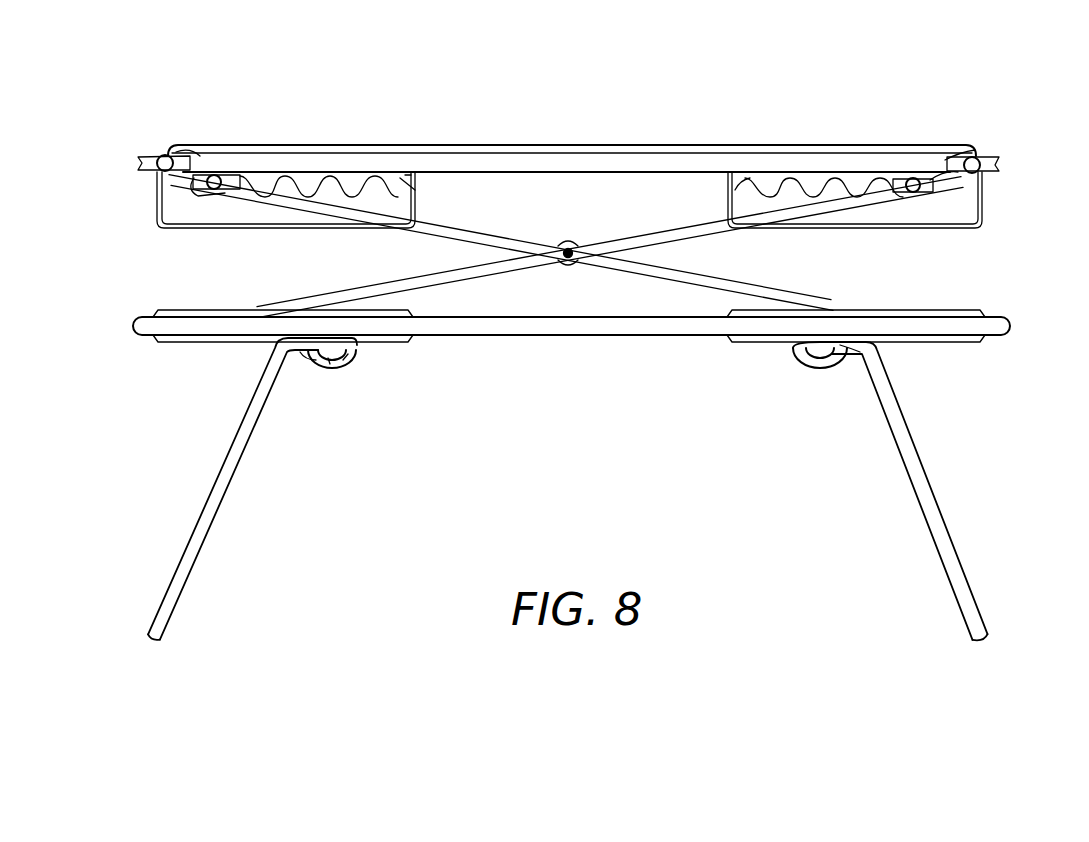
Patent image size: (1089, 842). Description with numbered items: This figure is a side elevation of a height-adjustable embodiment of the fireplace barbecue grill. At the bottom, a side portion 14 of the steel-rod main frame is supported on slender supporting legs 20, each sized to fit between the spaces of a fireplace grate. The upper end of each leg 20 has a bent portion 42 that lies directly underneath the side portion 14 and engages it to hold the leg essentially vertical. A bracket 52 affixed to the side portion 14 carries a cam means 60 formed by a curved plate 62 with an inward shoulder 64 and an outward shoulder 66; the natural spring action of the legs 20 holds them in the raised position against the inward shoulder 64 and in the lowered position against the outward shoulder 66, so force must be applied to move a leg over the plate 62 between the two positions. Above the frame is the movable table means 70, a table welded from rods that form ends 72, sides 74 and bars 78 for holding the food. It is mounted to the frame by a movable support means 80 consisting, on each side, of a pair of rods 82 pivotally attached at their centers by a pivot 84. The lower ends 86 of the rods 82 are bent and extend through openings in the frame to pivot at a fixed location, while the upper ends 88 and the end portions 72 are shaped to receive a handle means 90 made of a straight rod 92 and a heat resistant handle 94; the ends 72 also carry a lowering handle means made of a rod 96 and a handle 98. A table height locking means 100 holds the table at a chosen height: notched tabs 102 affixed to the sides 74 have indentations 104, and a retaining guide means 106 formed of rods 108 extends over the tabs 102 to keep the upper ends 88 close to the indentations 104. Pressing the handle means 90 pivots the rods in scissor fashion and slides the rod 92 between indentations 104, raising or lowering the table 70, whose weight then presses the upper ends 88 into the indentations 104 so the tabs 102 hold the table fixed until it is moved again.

The side portion 14 is at (545, 336).
The supporting leg 20 is at (197, 555).
The bent portion 42 is at (850, 356).
The bracket 52 is at (805, 362).
The cam means 60 is at (328, 366).
The curved plate 62 is at (357, 348).
The inward shoulder 64 is at (344, 362).
The outward shoulder 66 is at (306, 361).
The movable table means 70 is at (640, 146).
The end 72 is at (978, 158).
The side 74 is at (773, 170).
The bar 78 is at (712, 154).
The movable support means 80 is at (578, 264).
The rod 82 is at (412, 290).
The pivot 84 is at (560, 244).
The lower end 86 is at (258, 306).
The upper end 88 is at (905, 178).
The handle means 90 is at (935, 172).
The straight rod 92 is at (213, 174).
The heat resistant handle 94 is at (235, 190).
The rod 96 is at (190, 150).
The handle 98 is at (150, 158).
The table height locking means 100 is at (845, 172).
The notched tab 102 is at (350, 176).
The indentation 104 is at (303, 176).
The retaining guide means 106 is at (430, 174).
The rod 108 is at (165, 228).